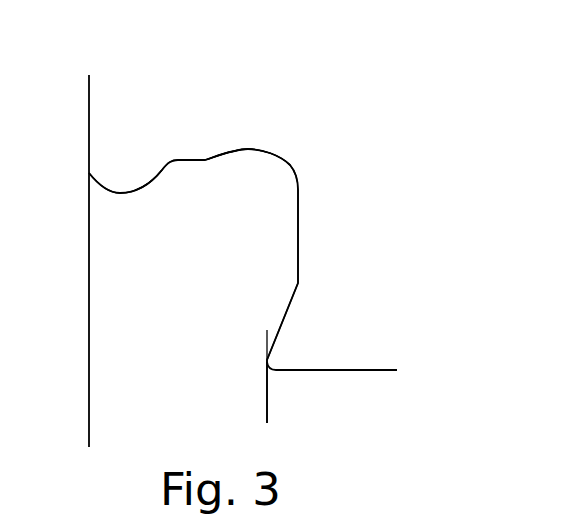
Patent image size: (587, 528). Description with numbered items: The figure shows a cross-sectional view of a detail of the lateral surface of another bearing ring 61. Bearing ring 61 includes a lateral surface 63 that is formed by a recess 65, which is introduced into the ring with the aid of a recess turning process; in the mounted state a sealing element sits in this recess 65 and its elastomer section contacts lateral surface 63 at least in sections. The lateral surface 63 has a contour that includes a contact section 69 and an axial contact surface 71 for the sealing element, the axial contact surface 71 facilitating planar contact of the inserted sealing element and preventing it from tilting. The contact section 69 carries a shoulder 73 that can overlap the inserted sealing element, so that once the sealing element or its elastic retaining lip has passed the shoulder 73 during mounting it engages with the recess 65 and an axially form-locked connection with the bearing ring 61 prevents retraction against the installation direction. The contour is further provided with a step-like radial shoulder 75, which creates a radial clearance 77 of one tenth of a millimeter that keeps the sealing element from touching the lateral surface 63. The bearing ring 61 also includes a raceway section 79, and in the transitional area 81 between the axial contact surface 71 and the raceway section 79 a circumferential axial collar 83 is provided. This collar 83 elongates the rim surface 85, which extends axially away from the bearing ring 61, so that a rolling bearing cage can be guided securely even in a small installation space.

The bearing ring 61 is at (416, 78).
The lateral surface 63 is at (183, 152).
The radial shoulder 75 is at (207, 158).
The shoulder 73 is at (149, 176).
The contact section 69 is at (160, 185).
The recess 65 is at (223, 172).
The radial clearance 77 is at (272, 160).
The axial contact surface 71 is at (298, 222).
The raceway section 79 is at (349, 361).
The rim surface 85 is at (335, 372).
The transitional area 81 is at (236, 334).
The axial collar 83 is at (266, 361).